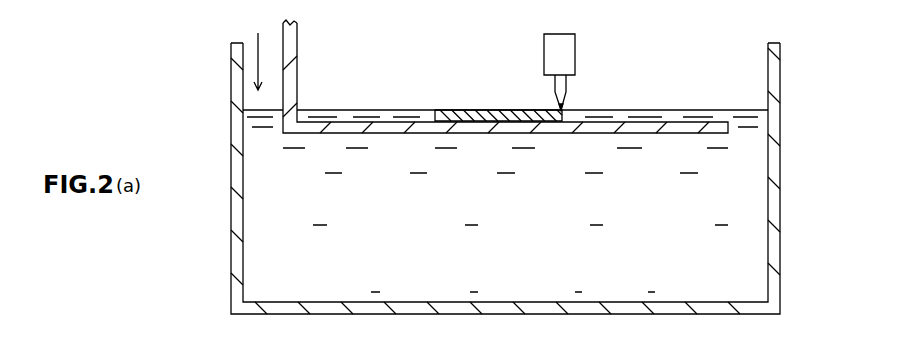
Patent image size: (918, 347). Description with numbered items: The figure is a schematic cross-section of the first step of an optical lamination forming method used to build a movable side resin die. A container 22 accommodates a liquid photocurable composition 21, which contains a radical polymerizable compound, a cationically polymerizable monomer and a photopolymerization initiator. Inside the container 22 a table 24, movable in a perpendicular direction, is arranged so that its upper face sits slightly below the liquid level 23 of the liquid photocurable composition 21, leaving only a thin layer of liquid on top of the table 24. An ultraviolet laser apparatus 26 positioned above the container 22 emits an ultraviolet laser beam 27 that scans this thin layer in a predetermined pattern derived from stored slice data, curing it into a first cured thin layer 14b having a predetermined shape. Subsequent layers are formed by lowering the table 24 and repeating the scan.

The first cured thin layer 14b is at (462, 110).
The liquid photocurable composition 21 is at (737, 257).
The container 22 is at (782, 180).
The liquid level 23 is at (722, 110).
The table 24 is at (297, 55).
The ultraviolet laser apparatus 26 is at (544, 49).
The ultraviolet laser beam 27 is at (556, 95).